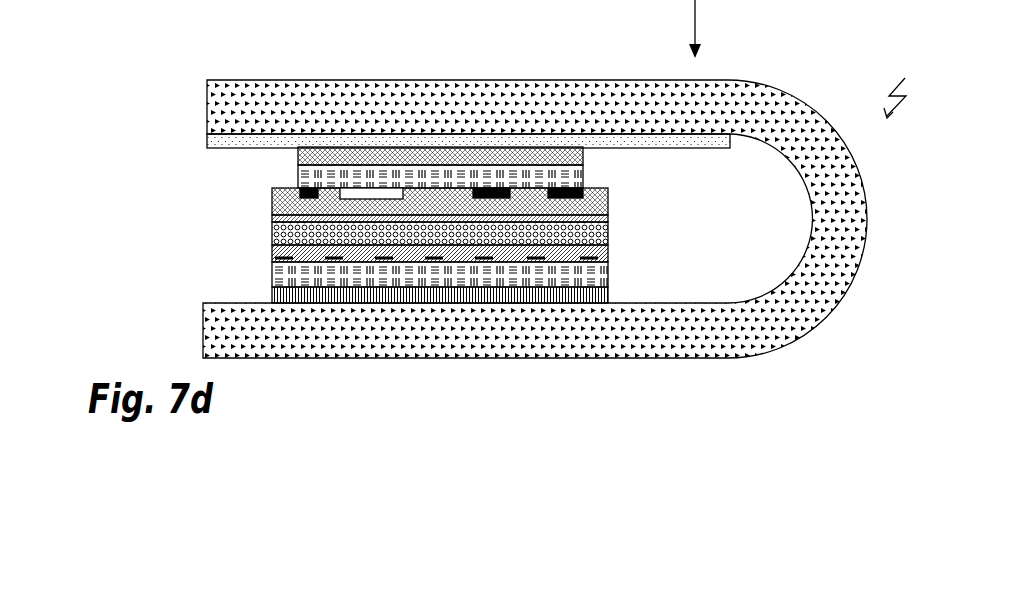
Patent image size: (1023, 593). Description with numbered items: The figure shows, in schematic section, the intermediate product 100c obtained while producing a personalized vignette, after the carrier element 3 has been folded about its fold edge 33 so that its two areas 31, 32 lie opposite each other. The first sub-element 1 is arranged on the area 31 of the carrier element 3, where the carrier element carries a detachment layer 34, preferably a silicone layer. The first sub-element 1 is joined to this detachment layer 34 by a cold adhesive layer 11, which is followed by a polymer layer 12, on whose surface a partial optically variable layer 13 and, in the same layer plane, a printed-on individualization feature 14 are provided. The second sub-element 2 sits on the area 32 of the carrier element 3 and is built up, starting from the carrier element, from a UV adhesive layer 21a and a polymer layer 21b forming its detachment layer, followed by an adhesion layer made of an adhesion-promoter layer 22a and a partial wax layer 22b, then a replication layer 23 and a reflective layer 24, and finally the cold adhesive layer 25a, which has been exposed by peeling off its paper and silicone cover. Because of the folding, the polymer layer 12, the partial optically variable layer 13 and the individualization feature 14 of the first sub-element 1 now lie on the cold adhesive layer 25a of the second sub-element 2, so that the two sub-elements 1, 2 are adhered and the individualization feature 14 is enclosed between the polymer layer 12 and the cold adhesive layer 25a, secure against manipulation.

The intermediate product 100c is at (932, 85).
The first sub-element 1 is at (484, 119).
The second sub-element 2 is at (517, 242).
The carrier element 3 is at (568, 219).
The area of the carrier element 31 is at (588, 52).
The area of the carrier element 32 is at (598, 373).
The fold edge 33 is at (845, 232).
The detachment layer 34 is at (629, 146).
The cold adhesive layer 11 is at (360, 162).
The polymer layer 12 is at (450, 177).
The partial optically variable layer 13 is at (385, 194).
The individualization feature 14 is at (313, 188).
The cold adhesive layer 25a is at (610, 204).
The reflective layer 24 is at (612, 219).
The replication layer 23 is at (611, 234).
The adhesion-promoter layer 22a is at (612, 248).
The partial wax layer 22b is at (612, 258).
The polymer layer 21b is at (612, 276).
The UV adhesive layer 21a is at (611, 298).